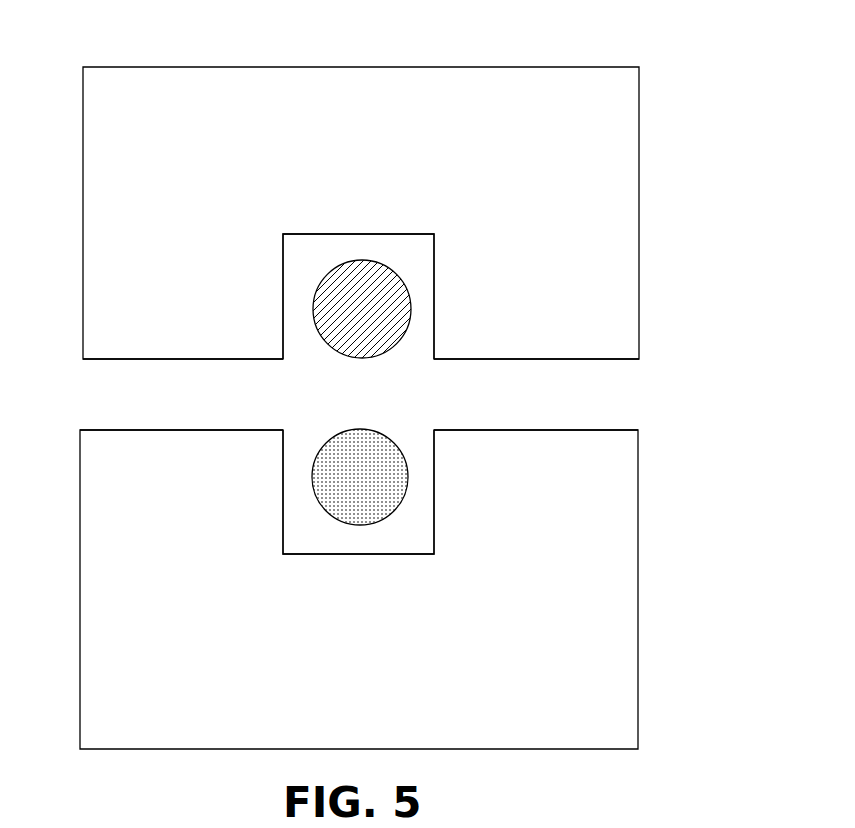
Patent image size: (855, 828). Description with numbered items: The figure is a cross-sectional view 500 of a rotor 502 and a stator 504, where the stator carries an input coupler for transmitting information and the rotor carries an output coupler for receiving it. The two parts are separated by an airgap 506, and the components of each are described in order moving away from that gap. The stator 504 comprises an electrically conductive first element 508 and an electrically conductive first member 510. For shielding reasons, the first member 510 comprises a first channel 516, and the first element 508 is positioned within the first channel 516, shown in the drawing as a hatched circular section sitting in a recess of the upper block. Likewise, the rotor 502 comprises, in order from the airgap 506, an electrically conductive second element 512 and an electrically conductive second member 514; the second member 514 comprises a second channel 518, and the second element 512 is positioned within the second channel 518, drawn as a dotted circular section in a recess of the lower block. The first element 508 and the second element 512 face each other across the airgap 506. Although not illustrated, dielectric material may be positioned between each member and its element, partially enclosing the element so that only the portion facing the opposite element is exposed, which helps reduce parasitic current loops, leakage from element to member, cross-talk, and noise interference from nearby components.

The cross-sectional view 500 is at (383, 376).
The rotor 502 is at (665, 479).
The stator 504 is at (673, 47).
The airgap 506 is at (491, 396).
The first element 508 is at (380, 354).
The first member 510 is at (130, 359).
The second element 512 is at (342, 432).
The second member 514 is at (110, 430).
The first channel 516 is at (416, 255).
The second channel 518 is at (422, 532).